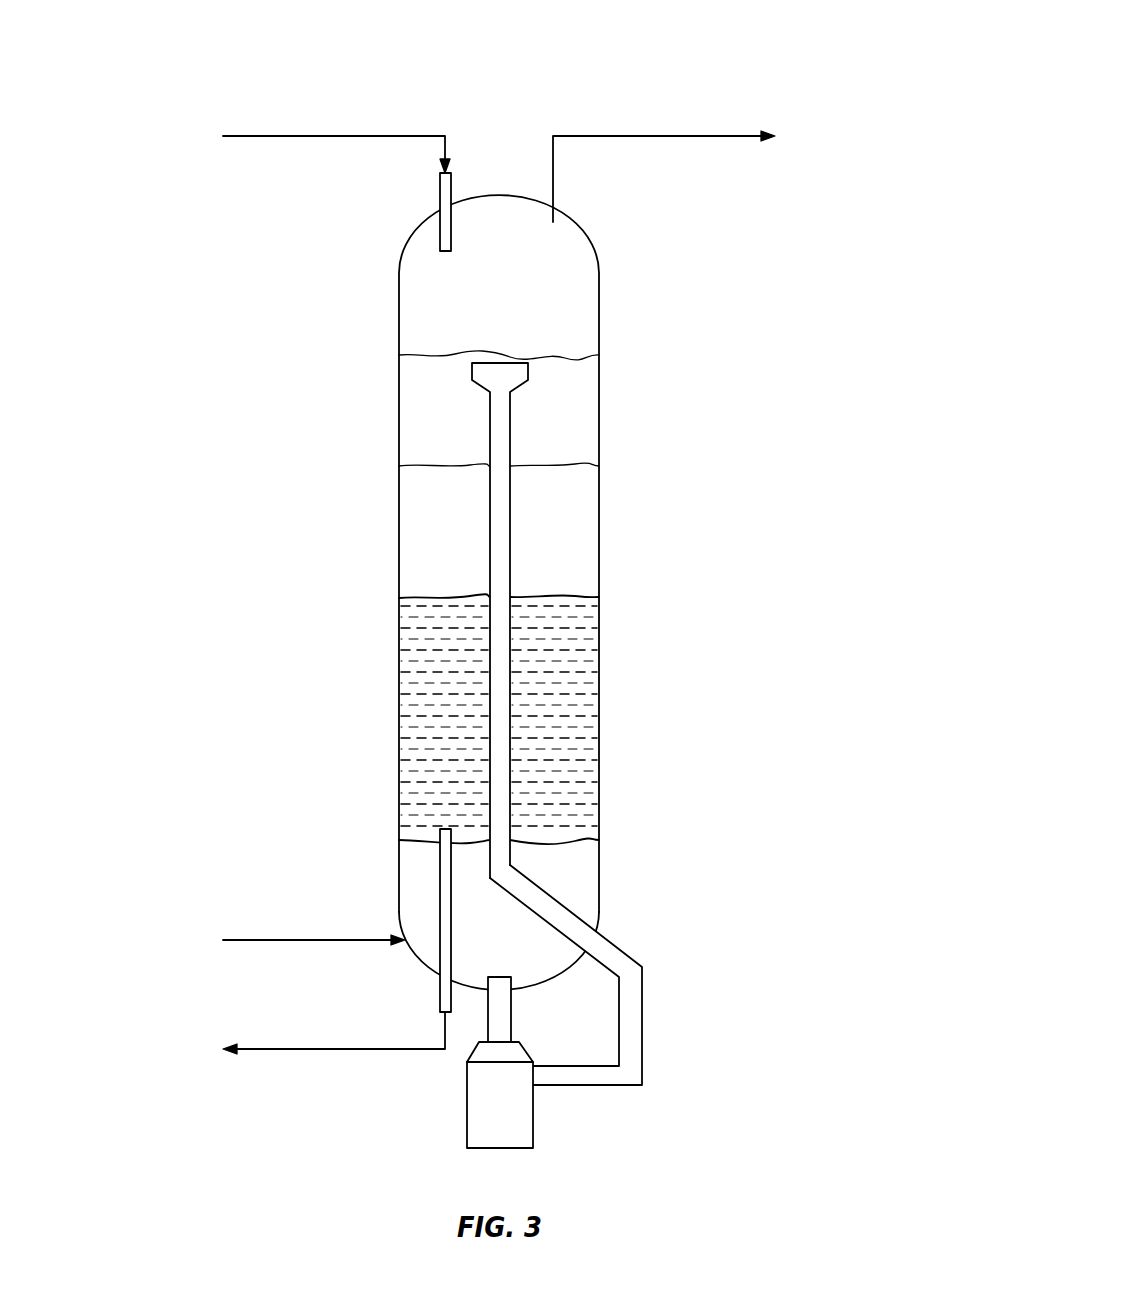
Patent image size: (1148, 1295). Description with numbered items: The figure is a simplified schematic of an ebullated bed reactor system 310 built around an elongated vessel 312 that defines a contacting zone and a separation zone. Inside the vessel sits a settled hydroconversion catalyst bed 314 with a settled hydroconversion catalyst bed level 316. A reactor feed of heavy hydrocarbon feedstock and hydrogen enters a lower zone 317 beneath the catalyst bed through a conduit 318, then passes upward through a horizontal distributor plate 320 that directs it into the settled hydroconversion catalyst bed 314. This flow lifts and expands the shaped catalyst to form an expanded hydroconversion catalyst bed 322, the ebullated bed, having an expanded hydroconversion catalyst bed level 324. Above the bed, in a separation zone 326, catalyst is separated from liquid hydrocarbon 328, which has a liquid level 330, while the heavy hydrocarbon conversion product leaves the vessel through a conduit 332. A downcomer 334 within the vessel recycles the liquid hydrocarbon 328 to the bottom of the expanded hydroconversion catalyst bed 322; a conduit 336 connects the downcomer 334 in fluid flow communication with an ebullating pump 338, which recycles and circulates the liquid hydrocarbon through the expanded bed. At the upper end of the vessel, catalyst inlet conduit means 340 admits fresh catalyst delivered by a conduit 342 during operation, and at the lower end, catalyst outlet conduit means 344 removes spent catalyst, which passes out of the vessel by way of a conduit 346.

The ebullated bed reactor system 310 is at (675, 60).
The elongated vessel 312 is at (600, 390).
The settled hydroconversion catalyst bed 314 is at (465, 735).
The settled hydroconversion catalyst bed level 316 is at (577, 597).
The lower zone 317 is at (522, 955).
The conduit 318 is at (318, 940).
The horizontal distributor plate 320 is at (420, 843).
The expanded hydroconversion catalyst bed 322 is at (465, 545).
The expanded hydroconversion catalyst bed level 324 is at (577, 466).
The separation zone 326 is at (521, 293).
The liquid hydrocarbon 328 is at (465, 428).
The liquid level 330 is at (577, 357).
The conduit 332 is at (662, 136).
The downcomer 334 is at (490, 503).
The conduit 336 is at (642, 990).
The ebullating pump 338 is at (467, 1105).
The catalyst inlet conduit means 340 is at (440, 196).
The conduit 342 is at (335, 136).
The catalyst outlet conduit means 344 is at (440, 958).
The conduit 346 is at (333, 1049).